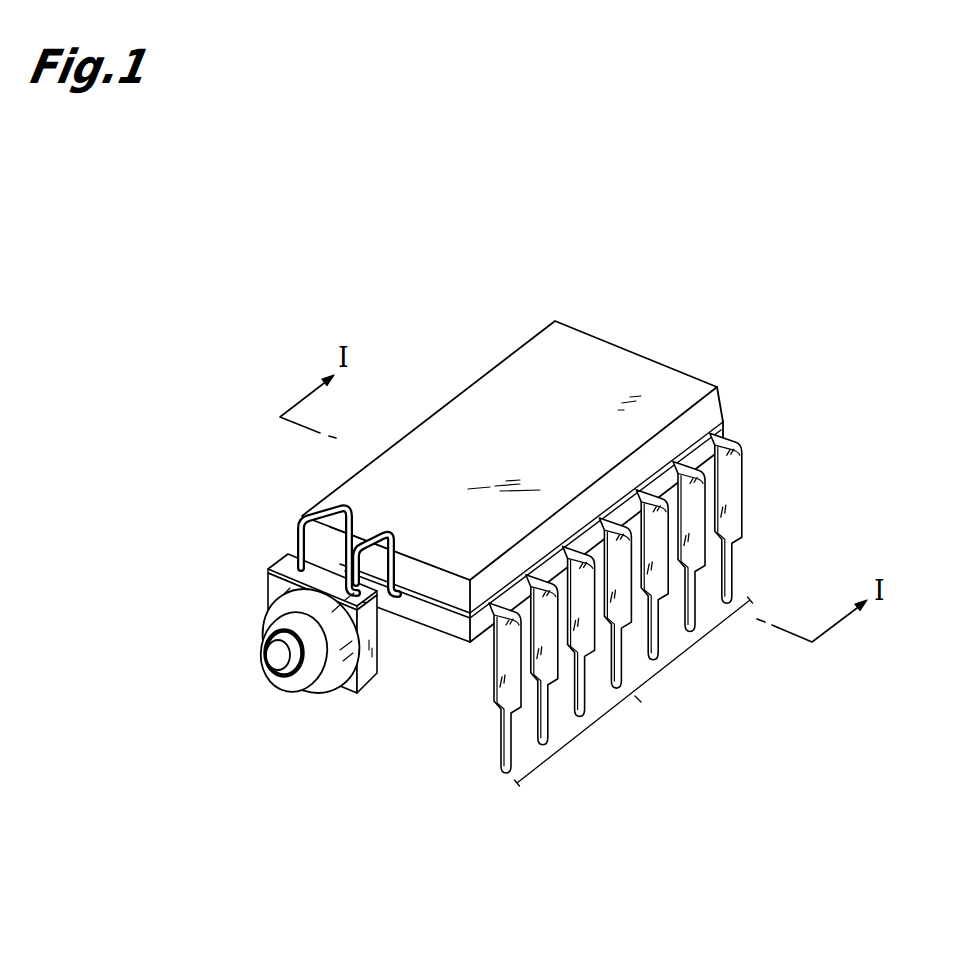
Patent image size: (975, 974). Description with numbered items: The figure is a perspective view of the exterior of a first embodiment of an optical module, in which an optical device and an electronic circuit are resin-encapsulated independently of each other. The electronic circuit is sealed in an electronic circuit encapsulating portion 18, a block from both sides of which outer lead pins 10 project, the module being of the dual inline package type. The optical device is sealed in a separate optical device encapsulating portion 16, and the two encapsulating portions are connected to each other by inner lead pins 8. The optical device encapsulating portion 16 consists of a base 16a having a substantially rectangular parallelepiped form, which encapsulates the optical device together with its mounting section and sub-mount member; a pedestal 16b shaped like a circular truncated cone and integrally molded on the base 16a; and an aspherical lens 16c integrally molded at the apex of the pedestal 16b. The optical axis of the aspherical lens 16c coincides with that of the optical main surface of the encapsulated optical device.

The outer lead pins 10 is at (541, 586).
The electronic circuit encapsulating portion 18 is at (616, 352).
The inner lead pins 8 is at (310, 512).
The optical device encapsulating portion 16 is at (232, 568).
The base 16a is at (340, 698).
The pedestal 16b is at (268, 597).
The aspherical lens 16c is at (267, 677).